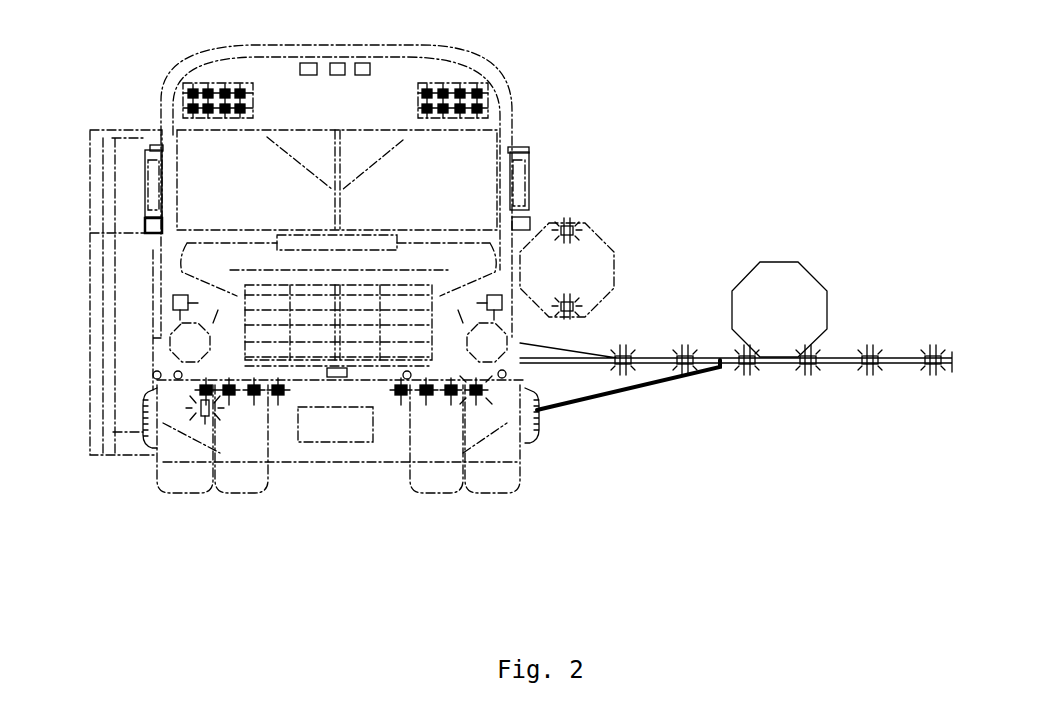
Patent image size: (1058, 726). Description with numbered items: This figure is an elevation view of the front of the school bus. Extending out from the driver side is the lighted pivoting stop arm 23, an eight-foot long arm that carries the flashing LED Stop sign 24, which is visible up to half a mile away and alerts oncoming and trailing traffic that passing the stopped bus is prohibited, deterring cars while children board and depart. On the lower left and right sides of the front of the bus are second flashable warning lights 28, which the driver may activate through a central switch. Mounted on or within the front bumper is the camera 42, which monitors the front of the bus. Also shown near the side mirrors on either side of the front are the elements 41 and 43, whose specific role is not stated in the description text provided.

The lighted pivoting stop arm 23 is at (902, 357).
The flashing LED Stop sign 24 is at (792, 280).
The second flashable warning lights 28 is at (483, 388).
The left side mirror camera 41 is at (145, 220).
The camera 42 is at (337, 382).
The right side mirror camera 43 is at (530, 218).